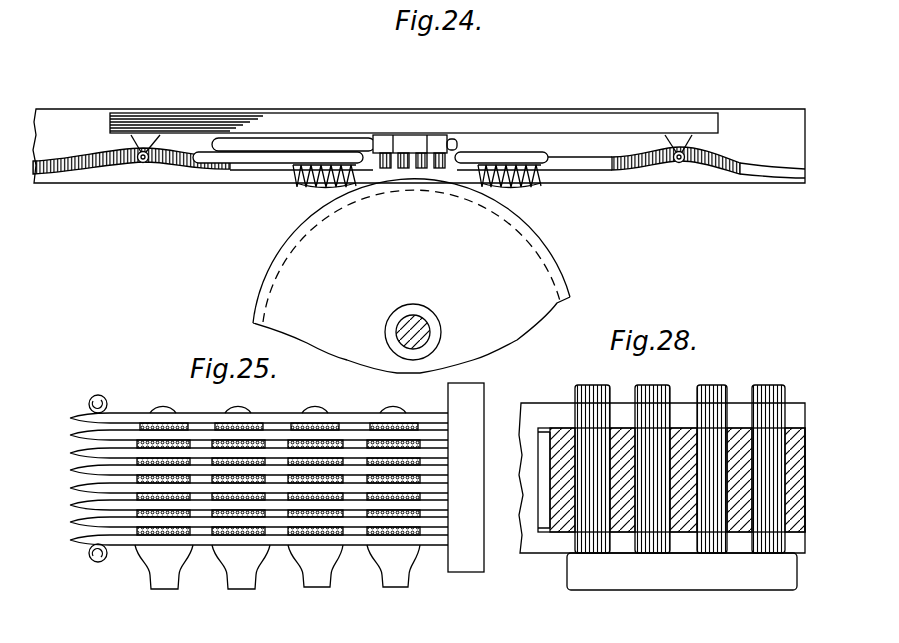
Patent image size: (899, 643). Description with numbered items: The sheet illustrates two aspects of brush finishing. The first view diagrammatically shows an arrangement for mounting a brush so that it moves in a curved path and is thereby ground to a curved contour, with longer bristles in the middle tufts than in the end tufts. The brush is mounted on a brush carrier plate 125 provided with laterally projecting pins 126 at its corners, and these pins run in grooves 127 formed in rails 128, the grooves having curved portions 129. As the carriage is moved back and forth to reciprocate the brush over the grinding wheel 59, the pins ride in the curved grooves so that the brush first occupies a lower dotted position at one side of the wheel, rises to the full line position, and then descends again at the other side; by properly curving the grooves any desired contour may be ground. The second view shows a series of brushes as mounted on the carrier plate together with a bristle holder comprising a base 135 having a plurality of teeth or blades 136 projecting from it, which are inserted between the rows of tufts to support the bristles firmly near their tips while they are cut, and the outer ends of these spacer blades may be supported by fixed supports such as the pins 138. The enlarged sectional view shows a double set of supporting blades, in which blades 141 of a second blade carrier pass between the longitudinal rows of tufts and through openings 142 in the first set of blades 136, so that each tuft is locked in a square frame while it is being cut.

In FIG. 24, the grinding wheel 59 is at (272, 288).
In FIG. 24, the brush carrier plate 125 is at (578, 120).
In FIG. 24, the laterally projecting pins 126 is at (146, 152).
In FIG. 24, the grooves 127 is at (272, 176).
In FIG. 24, the rails 128 is at (96, 178).
In FIG. 24, the curved portions 129 is at (181, 150).
In FIG. 25, the base 135 is at (457, 558).
In FIG. 25, the teeth or blades 136 is at (357, 538).
In FIG. 28, the teeth or blades 136 is at (545, 403).
In FIG. 25, the pins 138 is at (91, 400).
In FIG. 28, the blades 141 is at (557, 518).
In FIG. 28, the openings 142 is at (563, 522).